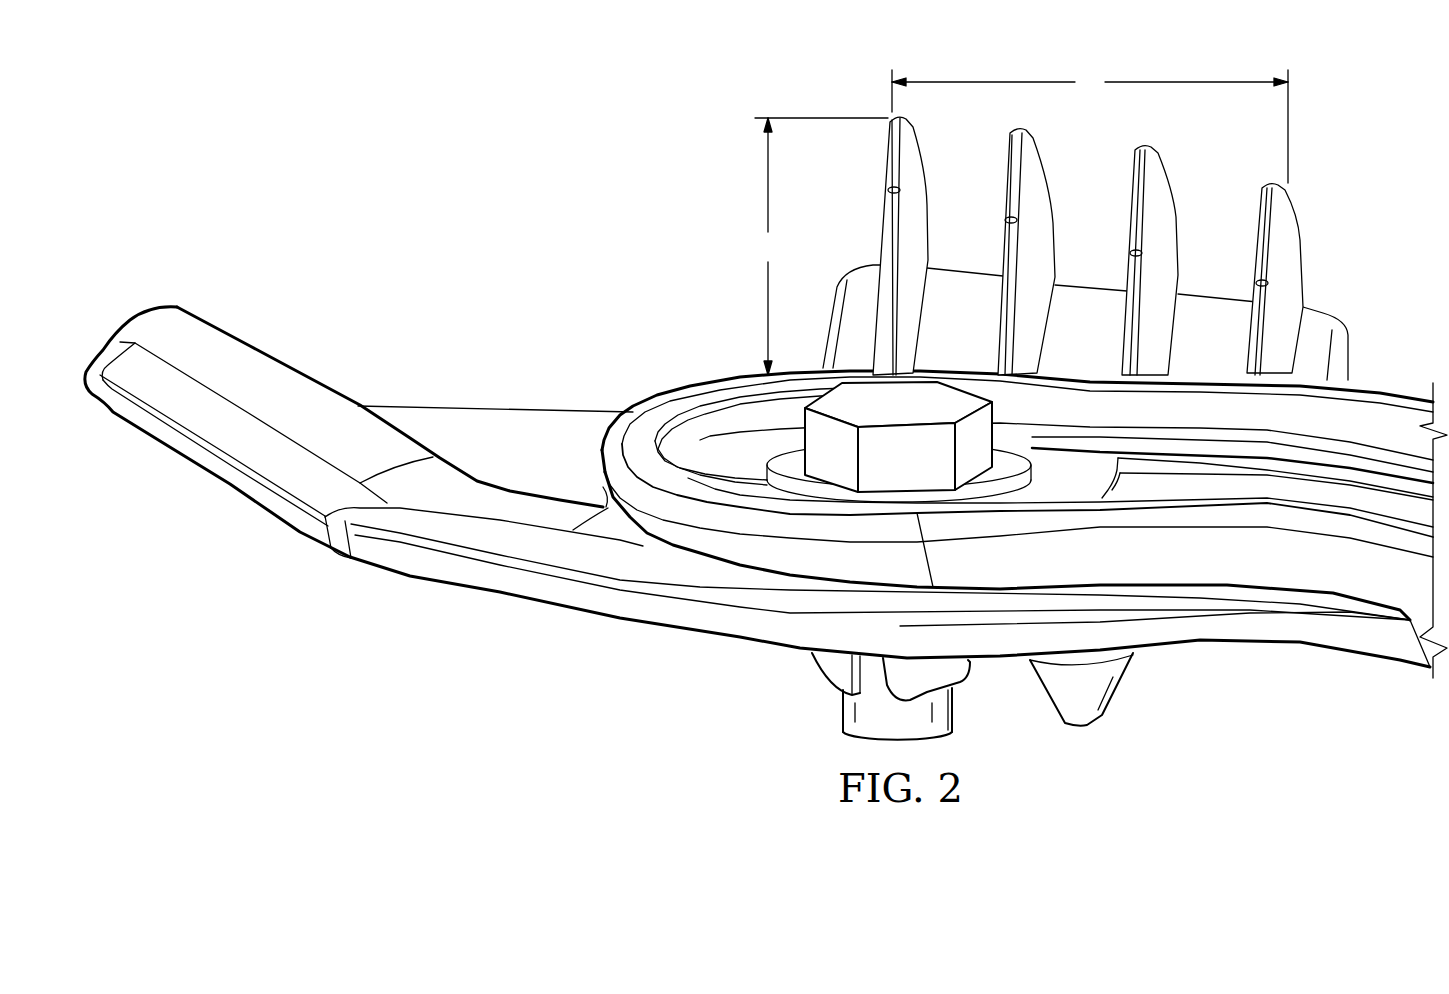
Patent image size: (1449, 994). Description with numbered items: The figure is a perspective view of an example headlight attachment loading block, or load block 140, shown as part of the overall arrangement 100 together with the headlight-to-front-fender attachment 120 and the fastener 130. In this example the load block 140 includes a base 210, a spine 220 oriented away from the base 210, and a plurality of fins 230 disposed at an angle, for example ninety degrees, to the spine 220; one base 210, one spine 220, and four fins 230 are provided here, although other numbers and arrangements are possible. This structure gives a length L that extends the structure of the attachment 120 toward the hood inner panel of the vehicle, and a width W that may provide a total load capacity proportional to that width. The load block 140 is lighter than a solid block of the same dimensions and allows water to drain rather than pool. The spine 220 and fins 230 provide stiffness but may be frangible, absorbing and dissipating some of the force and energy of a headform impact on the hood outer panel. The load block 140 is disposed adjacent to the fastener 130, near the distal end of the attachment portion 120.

The attachment assembly 100 is at (586, 146).
The headlight-to-front-fender attachment 120 is at (470, 578).
The fastener 130 is at (943, 398).
The load block 140 is at (1136, 248).
The base 210 is at (1193, 386).
The spine 220 is at (1075, 293).
The fins 230 is at (920, 153).